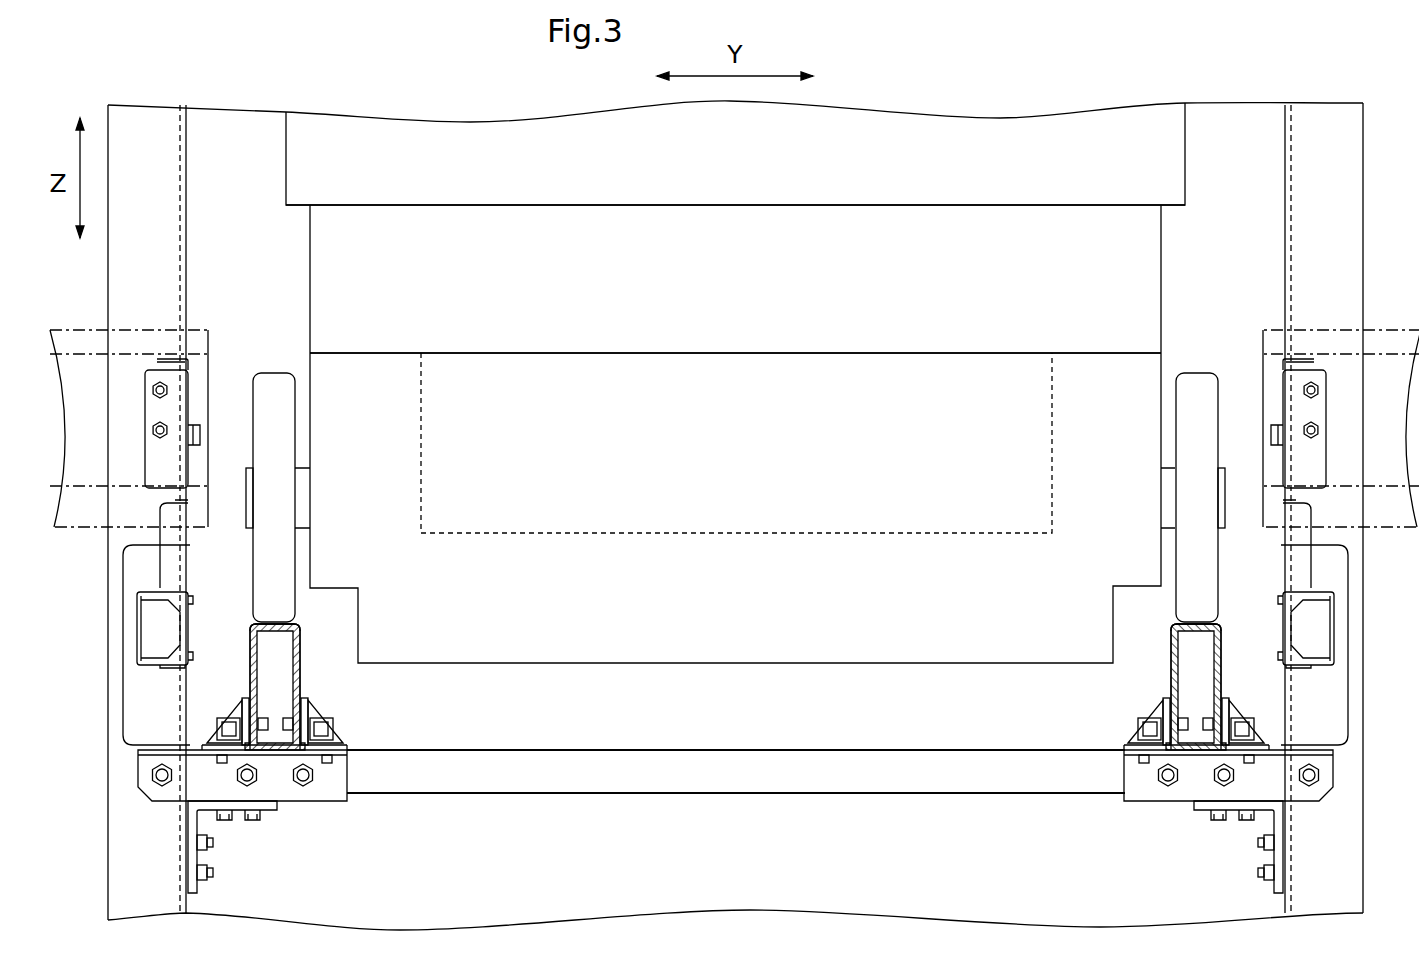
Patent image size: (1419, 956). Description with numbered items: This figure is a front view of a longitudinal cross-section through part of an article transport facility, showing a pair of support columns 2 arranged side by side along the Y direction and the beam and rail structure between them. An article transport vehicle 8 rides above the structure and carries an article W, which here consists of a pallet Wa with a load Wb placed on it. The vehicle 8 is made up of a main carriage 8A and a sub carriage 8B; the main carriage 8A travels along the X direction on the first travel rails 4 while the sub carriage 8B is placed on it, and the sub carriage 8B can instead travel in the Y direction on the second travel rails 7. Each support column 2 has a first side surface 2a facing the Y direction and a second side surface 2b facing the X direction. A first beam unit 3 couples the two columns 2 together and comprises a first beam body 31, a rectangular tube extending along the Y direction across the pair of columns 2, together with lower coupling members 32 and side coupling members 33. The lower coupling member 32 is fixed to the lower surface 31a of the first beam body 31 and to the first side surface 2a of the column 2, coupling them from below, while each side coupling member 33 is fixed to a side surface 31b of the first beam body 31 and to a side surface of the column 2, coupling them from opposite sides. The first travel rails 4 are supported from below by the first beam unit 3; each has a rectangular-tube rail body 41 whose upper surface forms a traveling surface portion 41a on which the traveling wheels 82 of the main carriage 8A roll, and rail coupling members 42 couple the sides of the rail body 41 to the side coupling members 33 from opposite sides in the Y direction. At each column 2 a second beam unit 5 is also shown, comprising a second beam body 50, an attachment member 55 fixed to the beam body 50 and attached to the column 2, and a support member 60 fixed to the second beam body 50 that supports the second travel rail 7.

The support column 2 is at (107, 834).
The first side surface 2a is at (188, 903).
The second side surface 2b is at (170, 223).
The first beam unit 3 is at (858, 792).
The first beam body 31 is at (683, 781).
The lower surface of the first beam body 31a is at (543, 794).
The side surface of the first beam body 31b is at (453, 762).
The lower coupling member 32 is at (197, 827).
The side coupling member 33 is at (142, 778).
The first travel rail 4 is at (307, 618).
The rail body 41 is at (300, 675).
The traveling surface portion 41a is at (275, 623).
The rail coupling member 42 is at (242, 706).
The second beam unit 5 is at (119, 623).
The second beam body 50 is at (135, 645).
The attachment member 55 is at (130, 705).
The support member 60 is at (172, 408).
The second travel rail 7 is at (84, 330).
The article transport vehicle 8 is at (482, 262).
The main carriage 8A is at (384, 346).
The sub carriage 8B is at (468, 346).
The traveling wheel 82 is at (276, 373).
The article W is at (1240, 160).
The pallet Wa is at (1145, 229).
The load Wb is at (1157, 178).